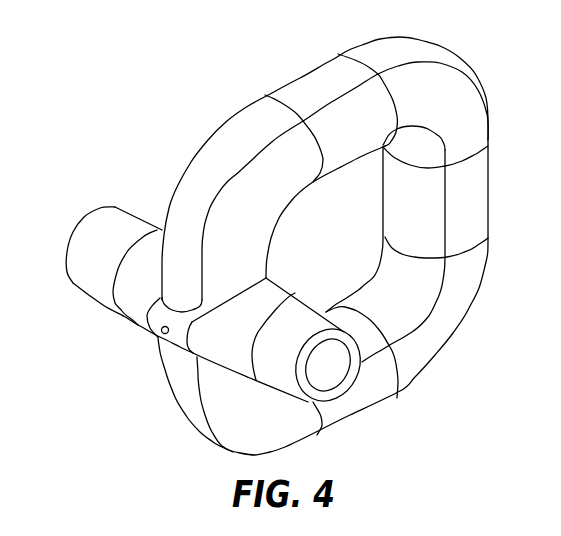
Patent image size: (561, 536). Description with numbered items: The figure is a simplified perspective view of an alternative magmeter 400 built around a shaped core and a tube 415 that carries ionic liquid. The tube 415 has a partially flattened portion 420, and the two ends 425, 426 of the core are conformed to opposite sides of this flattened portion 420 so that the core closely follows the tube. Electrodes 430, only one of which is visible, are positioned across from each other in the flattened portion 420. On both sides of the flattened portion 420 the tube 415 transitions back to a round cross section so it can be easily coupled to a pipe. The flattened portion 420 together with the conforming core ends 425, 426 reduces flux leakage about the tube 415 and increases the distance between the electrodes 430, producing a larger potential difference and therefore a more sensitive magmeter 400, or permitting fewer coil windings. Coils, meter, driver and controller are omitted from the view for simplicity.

The magmeter 400 is at (149, 99).
The tube 415 is at (98, 272).
The partially flattened portion 420 is at (147, 320).
The end of the core 425 is at (238, 286).
The end of the core 426 is at (170, 392).
The electrodes 430 is at (161, 336).